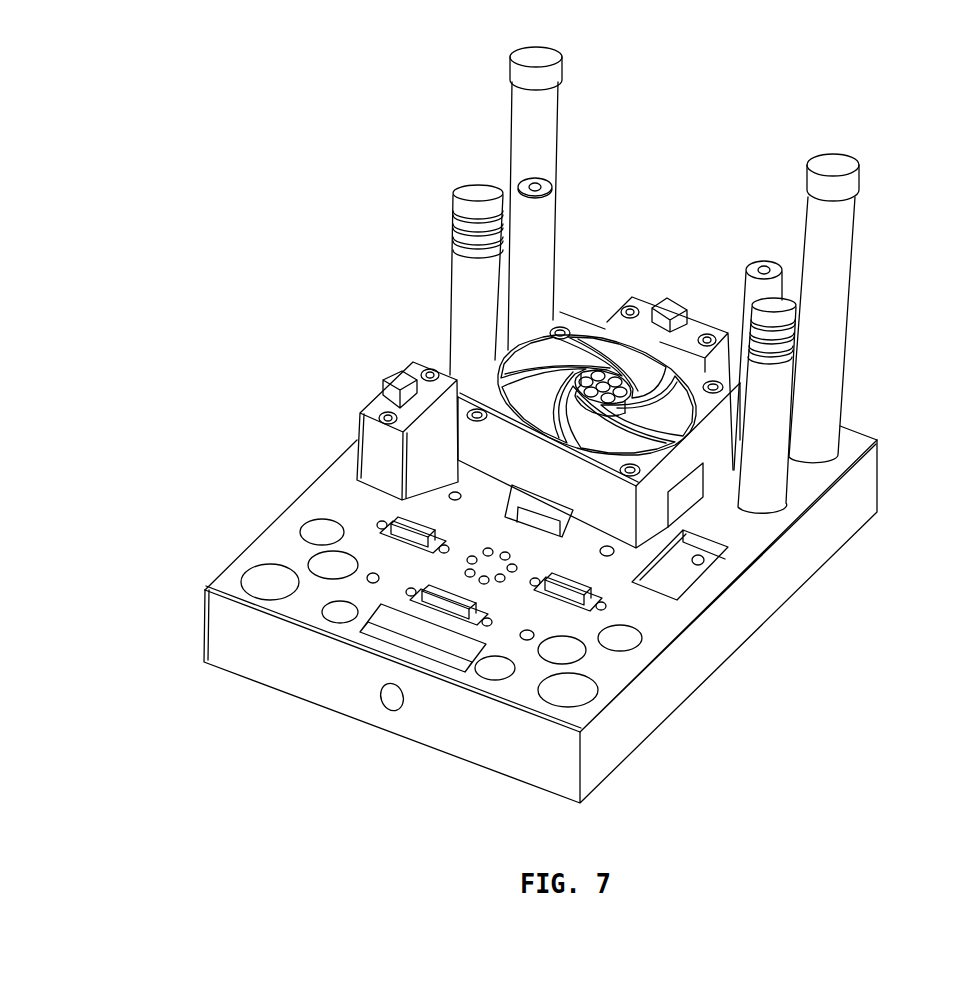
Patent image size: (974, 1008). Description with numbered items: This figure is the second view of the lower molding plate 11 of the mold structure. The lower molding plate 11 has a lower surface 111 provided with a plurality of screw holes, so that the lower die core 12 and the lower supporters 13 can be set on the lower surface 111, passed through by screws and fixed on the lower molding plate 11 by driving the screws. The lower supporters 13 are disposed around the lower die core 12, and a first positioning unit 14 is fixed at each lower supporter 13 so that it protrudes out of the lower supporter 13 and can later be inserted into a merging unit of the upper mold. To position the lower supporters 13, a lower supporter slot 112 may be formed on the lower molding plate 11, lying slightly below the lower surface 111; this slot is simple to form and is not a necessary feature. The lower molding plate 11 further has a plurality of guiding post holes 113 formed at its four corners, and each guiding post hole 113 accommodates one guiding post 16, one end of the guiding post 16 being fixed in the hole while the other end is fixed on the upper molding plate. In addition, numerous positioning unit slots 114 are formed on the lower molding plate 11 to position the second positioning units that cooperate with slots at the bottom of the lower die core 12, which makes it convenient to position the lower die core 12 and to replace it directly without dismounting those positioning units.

The lower molding plate 11 is at (845, 512).
The lower surface 111 is at (343, 462).
The lower supporter slot 112 is at (393, 630).
The guiding post hole 113 is at (320, 533).
The positioning unit slot 114 is at (400, 537).
The lower die core 12 is at (568, 340).
The lower supporter 13 is at (372, 408).
The first positioning unit 14 is at (397, 375).
The guiding post 16 is at (467, 278).